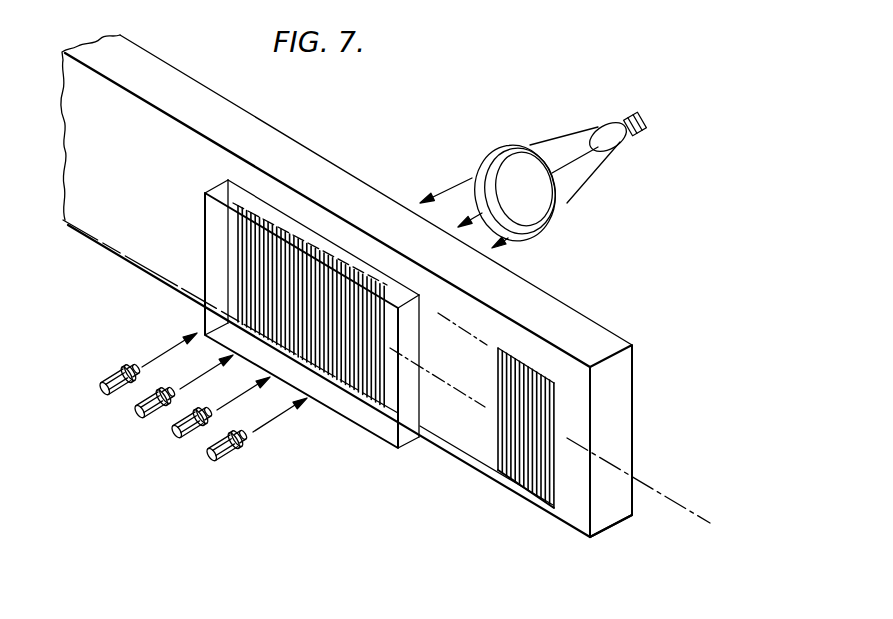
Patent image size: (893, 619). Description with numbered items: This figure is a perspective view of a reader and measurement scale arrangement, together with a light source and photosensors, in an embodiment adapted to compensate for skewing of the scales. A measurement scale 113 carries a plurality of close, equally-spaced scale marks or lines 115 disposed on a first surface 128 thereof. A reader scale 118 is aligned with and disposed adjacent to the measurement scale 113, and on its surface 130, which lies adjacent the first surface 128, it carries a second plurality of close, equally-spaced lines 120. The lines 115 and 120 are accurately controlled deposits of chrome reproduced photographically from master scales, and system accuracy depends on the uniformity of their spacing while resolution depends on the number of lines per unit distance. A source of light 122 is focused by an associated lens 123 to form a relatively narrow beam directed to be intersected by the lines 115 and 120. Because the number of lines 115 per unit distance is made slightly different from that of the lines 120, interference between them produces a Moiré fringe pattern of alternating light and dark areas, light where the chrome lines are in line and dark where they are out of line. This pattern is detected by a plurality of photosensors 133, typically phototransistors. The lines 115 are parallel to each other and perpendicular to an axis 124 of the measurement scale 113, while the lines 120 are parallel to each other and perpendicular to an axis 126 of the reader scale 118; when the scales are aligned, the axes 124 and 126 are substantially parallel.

The measurement scale 113 is at (593, 332).
The scale marks or lines 115 is at (560, 445).
The reader scale 118 is at (362, 428).
The scale marks or lines 120 is at (383, 375).
The source of light 122 is at (645, 130).
The lens 123 is at (502, 147).
The axis of the measurement scale 124 is at (675, 500).
The axis of the reader scale 126 is at (428, 367).
The first surface 128 is at (400, 272).
The surface 130 is at (422, 320).
The photosensors 133 is at (208, 450).